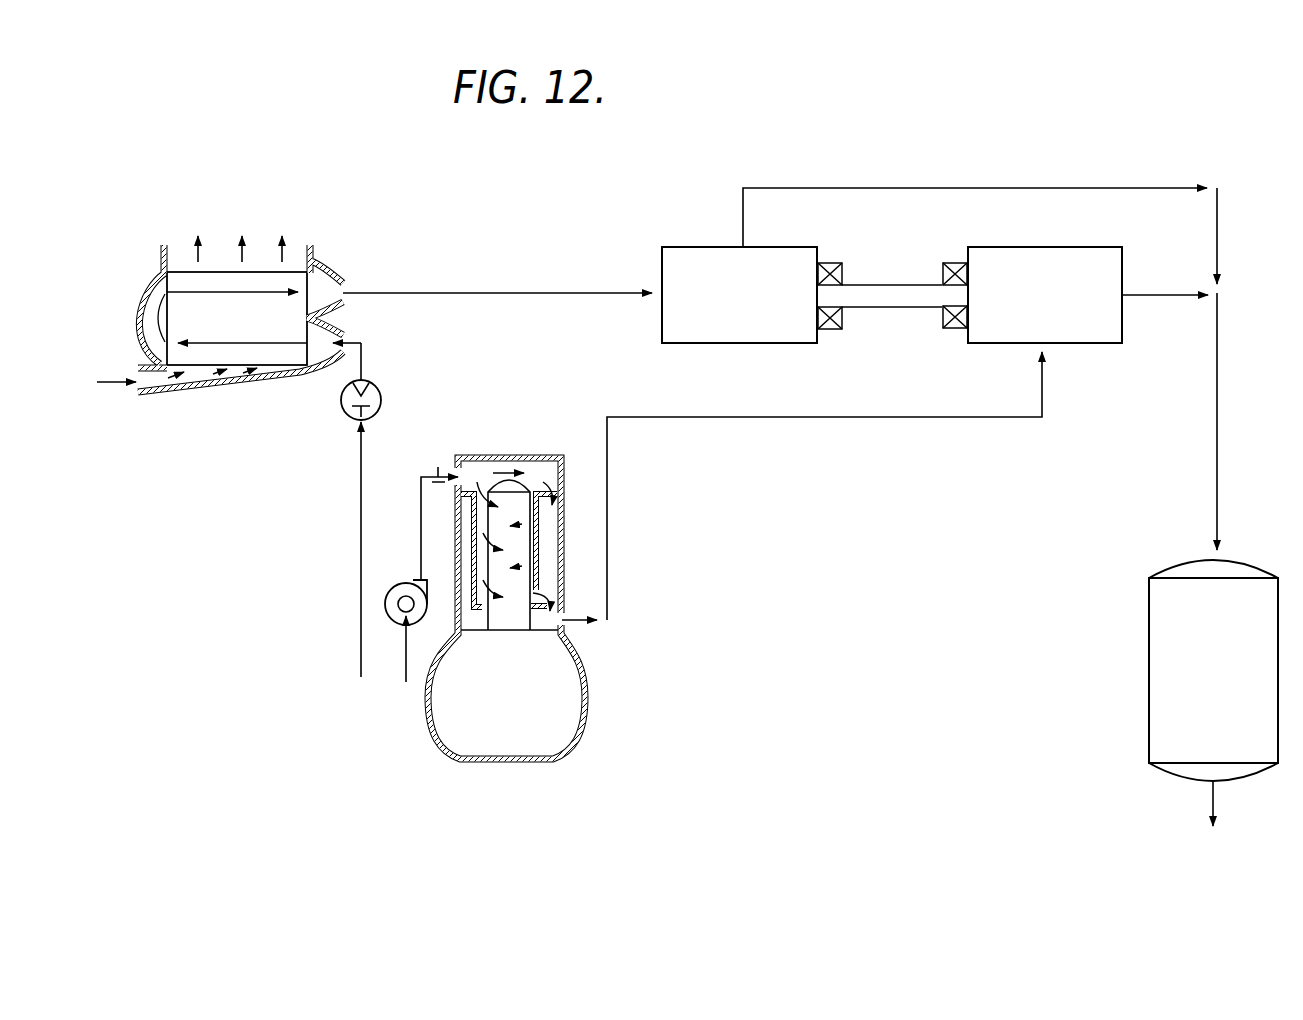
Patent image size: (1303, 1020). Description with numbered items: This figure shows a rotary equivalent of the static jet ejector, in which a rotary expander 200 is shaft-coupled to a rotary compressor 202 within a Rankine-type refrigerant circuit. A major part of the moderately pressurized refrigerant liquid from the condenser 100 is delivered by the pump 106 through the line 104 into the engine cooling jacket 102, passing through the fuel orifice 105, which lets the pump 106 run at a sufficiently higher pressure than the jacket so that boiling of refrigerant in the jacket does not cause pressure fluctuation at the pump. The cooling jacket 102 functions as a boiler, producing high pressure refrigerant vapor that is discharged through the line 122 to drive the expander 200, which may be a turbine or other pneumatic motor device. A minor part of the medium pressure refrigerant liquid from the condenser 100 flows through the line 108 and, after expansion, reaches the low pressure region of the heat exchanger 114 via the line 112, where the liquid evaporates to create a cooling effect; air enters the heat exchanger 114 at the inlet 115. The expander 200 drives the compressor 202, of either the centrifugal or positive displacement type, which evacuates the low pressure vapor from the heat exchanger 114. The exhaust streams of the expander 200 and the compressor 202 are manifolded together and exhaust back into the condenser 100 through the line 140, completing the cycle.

The radiator (condenser) 100 is at (1149, 715).
The engine cooling jacket manifold 102 is at (565, 487).
The line 104 is at (428, 477).
The fuel orifice 105 is at (440, 466).
The pump 106 is at (397, 617).
The line 108 is at (358, 625).
The line 112 is at (363, 363).
The heat exchanger (evaporator) 114 is at (138, 313).
The air inlet 115 is at (110, 384).
The line 122 is at (670, 417).
The line 140 is at (1218, 348).
The rotary expander (turbine) 200 is at (1082, 343).
The rotary compressor 202 is at (757, 343).